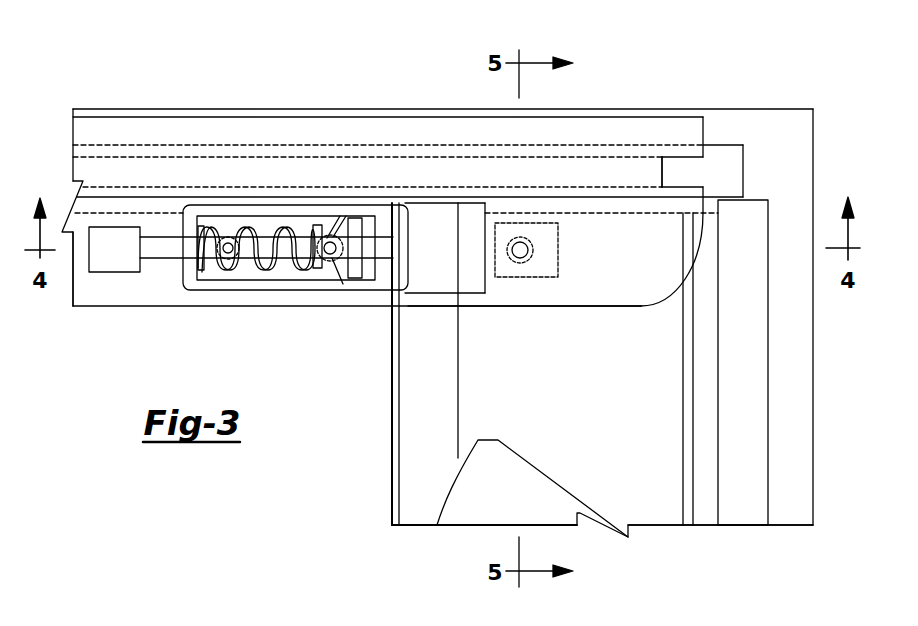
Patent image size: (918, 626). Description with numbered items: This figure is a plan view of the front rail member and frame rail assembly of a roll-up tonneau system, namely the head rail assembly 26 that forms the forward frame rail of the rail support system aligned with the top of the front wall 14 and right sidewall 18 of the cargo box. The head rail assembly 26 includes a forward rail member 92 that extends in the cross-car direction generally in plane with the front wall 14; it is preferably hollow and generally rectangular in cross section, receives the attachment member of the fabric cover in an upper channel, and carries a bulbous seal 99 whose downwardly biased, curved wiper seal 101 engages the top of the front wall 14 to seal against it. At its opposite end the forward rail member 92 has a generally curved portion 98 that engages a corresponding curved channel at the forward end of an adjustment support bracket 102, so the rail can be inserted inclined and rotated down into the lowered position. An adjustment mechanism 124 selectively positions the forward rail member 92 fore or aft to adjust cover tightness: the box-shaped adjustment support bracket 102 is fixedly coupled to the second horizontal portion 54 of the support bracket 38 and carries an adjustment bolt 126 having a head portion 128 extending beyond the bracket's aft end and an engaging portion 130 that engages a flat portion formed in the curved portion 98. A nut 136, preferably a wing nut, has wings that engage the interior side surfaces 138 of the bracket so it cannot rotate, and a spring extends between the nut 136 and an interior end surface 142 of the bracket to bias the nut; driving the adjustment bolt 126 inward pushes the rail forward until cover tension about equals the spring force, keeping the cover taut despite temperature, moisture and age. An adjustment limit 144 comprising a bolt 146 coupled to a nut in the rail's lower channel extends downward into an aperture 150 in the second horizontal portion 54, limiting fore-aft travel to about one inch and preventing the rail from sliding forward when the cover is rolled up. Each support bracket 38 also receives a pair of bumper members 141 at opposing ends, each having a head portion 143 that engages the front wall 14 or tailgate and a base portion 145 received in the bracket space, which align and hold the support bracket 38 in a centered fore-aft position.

The front wall 14 is at (813, 508).
The right sidewall 18 is at (349, 108).
The head rail assembly 26 is at (321, 360).
The support bracket 38 is at (83, 310).
The second horizontal portion 54 is at (100, 290).
The forward rail member 92 is at (410, 456).
The generally curved portion 98 is at (410, 348).
The bulbous seal 99 is at (705, 463).
The wiper seal 101 is at (768, 487).
The adjustment support bracket 102 is at (232, 286).
The adjustment mechanism 124 is at (189, 320).
The adjustment bolt 126 is at (88, 232).
The head portion 128 is at (125, 273).
The engaging portion 130 is at (400, 250).
The nut 136 is at (337, 277).
The interior side surfaces 138 is at (313, 275).
The bumper member 141 is at (722, 153).
The interior end surface 142 is at (203, 222).
The head portion 143 is at (722, 175).
The adjustment limit 144 is at (535, 250).
The base portion 145 is at (662, 172).
The bolt 146 is at (508, 263).
The aperture 150 is at (540, 273).